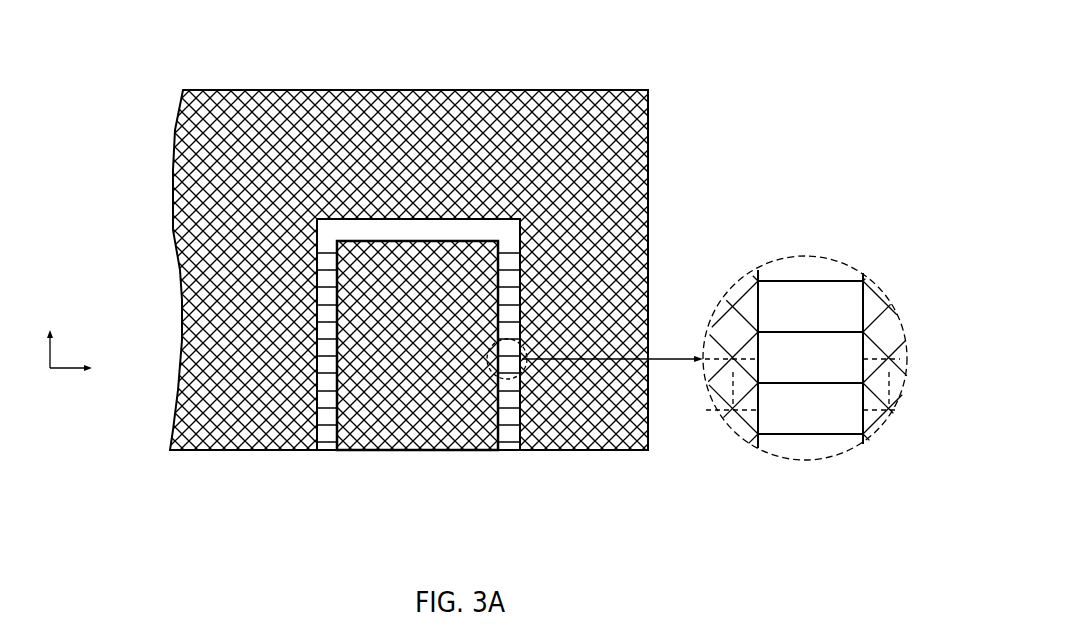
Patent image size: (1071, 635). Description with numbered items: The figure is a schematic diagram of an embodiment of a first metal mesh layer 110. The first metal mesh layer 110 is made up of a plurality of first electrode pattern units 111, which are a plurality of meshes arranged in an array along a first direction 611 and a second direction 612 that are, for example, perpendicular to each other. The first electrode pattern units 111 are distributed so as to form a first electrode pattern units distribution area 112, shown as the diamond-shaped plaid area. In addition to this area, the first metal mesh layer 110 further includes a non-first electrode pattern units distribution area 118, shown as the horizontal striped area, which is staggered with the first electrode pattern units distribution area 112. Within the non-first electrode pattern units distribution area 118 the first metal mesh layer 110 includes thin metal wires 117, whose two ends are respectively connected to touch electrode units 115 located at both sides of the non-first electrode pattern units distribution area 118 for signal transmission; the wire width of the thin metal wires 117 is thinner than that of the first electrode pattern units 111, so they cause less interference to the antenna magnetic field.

The first metal mesh layer 110 is at (426, 271).
The first electrode pattern units 111 is at (617, 142).
The first electrode pattern units distribution area 112 is at (302, 90).
The touch electrode units 115 is at (723, 373).
The thin metal wires 117 is at (325, 410).
The non-first electrode pattern units distribution area 118 is at (508, 413).
The first direction 611 is at (92, 371).
The second direction 612 is at (51, 332).